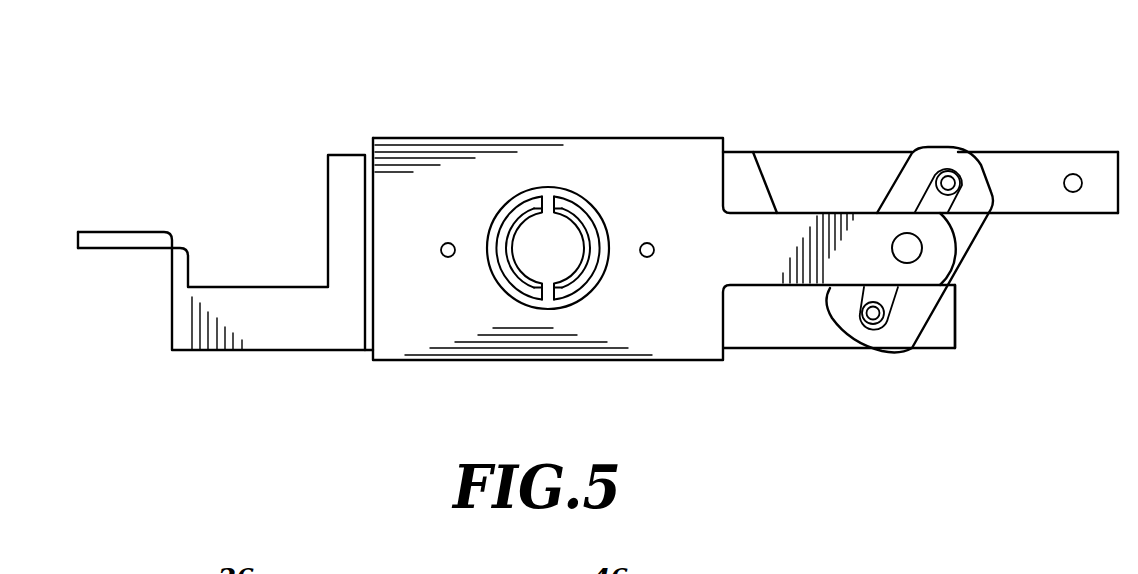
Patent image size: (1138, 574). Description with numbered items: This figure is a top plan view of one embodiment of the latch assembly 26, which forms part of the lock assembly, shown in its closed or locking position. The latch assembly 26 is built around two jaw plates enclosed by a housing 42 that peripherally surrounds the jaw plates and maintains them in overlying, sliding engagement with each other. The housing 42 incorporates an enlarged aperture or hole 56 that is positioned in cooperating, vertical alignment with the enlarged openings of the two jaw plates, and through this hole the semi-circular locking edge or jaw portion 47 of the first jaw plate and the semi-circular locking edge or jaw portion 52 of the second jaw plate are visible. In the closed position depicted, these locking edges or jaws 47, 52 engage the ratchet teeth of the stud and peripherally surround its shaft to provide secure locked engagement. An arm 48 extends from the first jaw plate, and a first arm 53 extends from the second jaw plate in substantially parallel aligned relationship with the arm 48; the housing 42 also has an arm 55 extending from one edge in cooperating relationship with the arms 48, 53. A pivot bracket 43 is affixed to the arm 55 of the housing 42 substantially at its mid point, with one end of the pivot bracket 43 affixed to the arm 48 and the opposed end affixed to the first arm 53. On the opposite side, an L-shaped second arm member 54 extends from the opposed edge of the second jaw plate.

The latch assembly 26 is at (732, 128).
The housing 42 is at (428, 210).
The pivot bracket 43 is at (963, 217).
The locking edge or jaw portion 47 is at (512, 263).
The arm 48 is at (1022, 172).
The locking edge or jaw portion 52 is at (587, 227).
The first arm 53 is at (933, 327).
The second arm member 54 is at (278, 312).
The arm 55 is at (870, 240).
The enlarged aperture or hole 56 is at (580, 277).